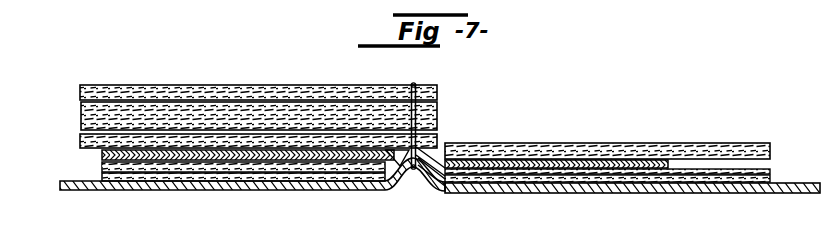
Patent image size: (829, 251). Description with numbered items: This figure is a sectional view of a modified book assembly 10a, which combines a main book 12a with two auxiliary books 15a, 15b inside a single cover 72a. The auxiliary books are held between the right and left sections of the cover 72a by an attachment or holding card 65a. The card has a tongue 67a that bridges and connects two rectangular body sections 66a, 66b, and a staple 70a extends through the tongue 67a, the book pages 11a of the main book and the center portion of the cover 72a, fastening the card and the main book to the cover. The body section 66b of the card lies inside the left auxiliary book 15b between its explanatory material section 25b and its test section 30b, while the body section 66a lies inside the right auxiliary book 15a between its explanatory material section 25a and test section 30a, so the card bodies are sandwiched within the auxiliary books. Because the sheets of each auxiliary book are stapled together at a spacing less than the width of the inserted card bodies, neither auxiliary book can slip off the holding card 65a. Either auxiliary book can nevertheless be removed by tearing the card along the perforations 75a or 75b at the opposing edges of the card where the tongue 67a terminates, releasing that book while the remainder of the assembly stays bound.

The book assembly 10a is at (499, 124).
The book pages 11a is at (252, 86).
The main book 12a is at (278, 112).
The auxiliary book 15a is at (640, 122).
The auxiliary book 15b is at (90, 163).
The explanatory material section 25a is at (735, 151).
The explanatory material section 25b is at (130, 165).
The test section 30a is at (690, 180).
The test section 30b is at (165, 180).
The holding card 65a is at (408, 176).
The rectangular body section 66a is at (588, 165).
The rectangular body section 66b is at (278, 165).
The tongue 67a is at (440, 148).
The staple 70a is at (411, 84).
The cover 72a is at (243, 192).
The perforations 75a is at (500, 176).
The perforations 75b is at (348, 166).